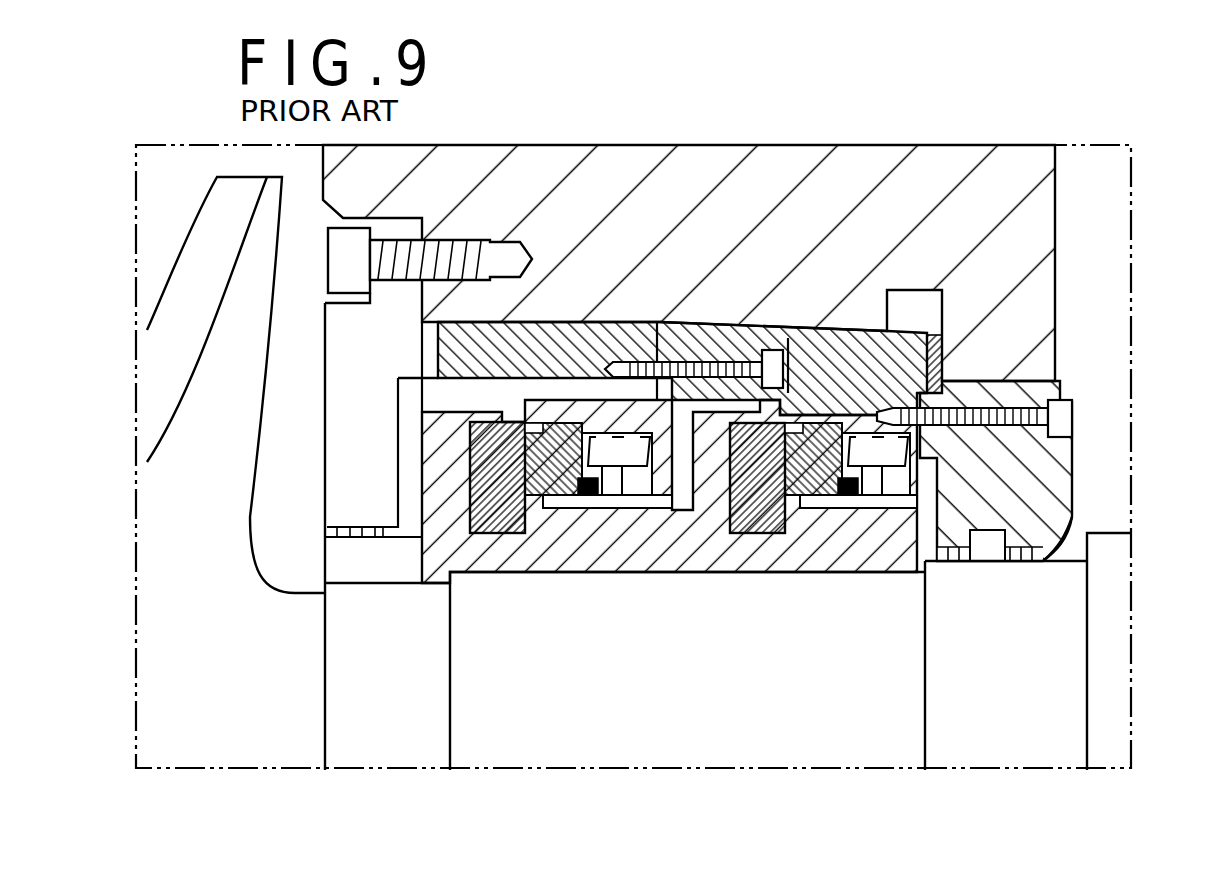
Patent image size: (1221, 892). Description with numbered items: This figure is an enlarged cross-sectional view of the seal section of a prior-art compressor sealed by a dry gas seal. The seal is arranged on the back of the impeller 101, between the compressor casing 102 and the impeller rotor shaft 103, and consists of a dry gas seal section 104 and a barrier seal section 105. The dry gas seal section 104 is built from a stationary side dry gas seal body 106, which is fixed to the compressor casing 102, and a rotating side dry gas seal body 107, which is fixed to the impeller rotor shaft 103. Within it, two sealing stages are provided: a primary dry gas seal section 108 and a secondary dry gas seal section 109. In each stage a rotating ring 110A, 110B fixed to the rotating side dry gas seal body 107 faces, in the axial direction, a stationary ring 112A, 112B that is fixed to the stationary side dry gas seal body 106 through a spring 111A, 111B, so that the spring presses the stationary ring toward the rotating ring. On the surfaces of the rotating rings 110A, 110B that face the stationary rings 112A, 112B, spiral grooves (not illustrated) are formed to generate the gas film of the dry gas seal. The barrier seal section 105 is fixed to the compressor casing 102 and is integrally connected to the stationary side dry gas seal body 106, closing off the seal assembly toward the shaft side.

The impeller 101 is at (210, 245).
The compressor casing 102 is at (696, 175).
The impeller rotor shaft 103 is at (960, 750).
The dry gas seal section 104 is at (676, 712).
The barrier seal section 105 is at (1068, 456).
The stationary side dry gas seal body 106 is at (550, 330).
The rotating side dry gas seal body 107 is at (677, 572).
The primary dry gas seal section 108 is at (563, 553).
The secondary dry gas seal section 109 is at (815, 554).
The rotating ring 110A is at (492, 534).
The rotating ring 110B is at (762, 535).
The spring 111A is at (618, 498).
The spring 111B is at (880, 498).
The stationary ring 112A is at (553, 500).
The stationary ring 112B is at (815, 500).